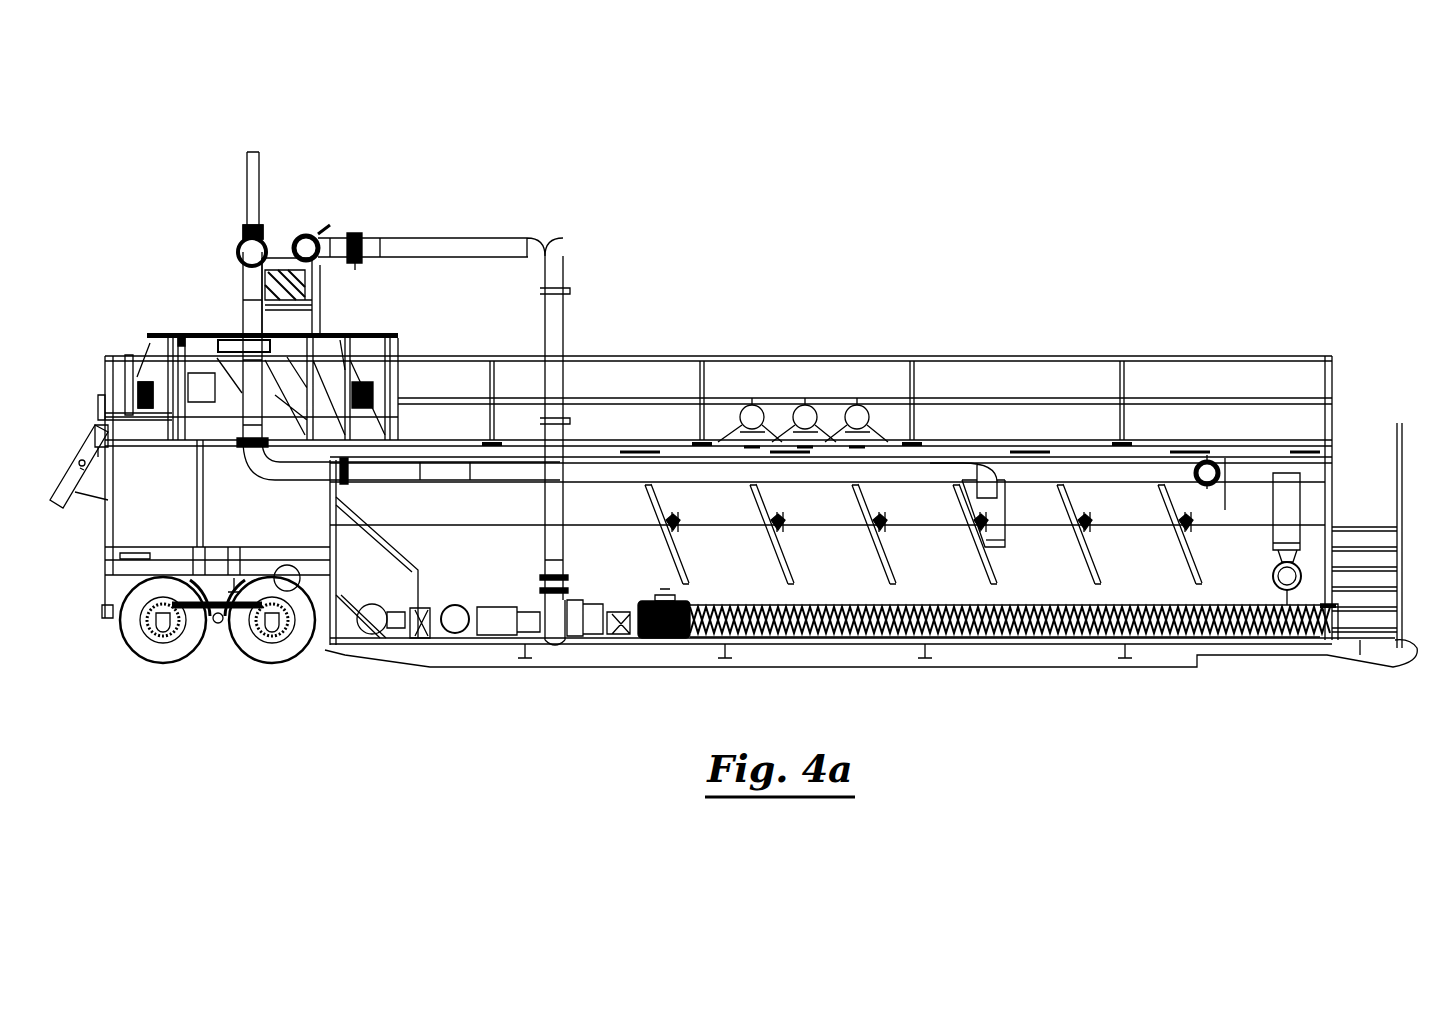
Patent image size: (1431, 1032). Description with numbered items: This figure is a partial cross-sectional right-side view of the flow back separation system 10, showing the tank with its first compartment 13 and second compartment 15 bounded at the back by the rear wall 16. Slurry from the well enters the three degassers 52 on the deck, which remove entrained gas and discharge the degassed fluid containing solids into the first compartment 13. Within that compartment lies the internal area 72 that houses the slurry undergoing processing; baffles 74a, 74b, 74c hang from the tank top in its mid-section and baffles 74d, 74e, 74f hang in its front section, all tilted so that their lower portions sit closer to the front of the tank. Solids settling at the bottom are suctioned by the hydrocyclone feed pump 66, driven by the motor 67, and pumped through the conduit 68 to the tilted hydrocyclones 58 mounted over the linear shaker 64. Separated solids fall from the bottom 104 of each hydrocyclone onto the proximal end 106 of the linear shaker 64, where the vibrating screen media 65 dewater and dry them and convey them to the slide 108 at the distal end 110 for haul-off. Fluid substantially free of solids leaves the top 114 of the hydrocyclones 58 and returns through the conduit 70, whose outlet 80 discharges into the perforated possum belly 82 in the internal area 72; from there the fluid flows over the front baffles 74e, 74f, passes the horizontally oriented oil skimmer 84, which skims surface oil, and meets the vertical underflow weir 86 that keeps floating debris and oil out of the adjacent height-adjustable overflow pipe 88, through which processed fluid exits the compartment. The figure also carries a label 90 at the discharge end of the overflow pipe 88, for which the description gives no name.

The flow back separation system 10 is at (802, 231).
The first compartment 13 is at (840, 570).
The second compartment 15 is at (265, 520).
The rear wall 16 is at (245, 605).
The degassers 52 is at (850, 403).
The hydrocyclones 58 is at (310, 265).
The linear shaker 64 is at (205, 238).
The vibrating screen media 65 is at (365, 350).
The hydrocyclone feed pump 66 is at (565, 642).
The motor 67 is at (680, 642).
The conduit 68 is at (560, 290).
The conduit 70 is at (930, 470).
The internal area 72 is at (595, 495).
The baffle 74a is at (690, 565).
The baffle 74b is at (787, 565).
The baffle 74c is at (892, 570).
The baffle 74d is at (995, 570).
The baffle 74e is at (1120, 495).
The baffle 74f is at (1178, 490).
The outlet 80 is at (1007, 490).
The possum belly 82 is at (1010, 505).
The oil skimmer 84 is at (1222, 492).
The underflow weir 86 is at (1228, 500).
The overflow pipe 88 is at (1290, 495).
The discharge pipe 90 is at (1287, 582).
The bottom 104 is at (330, 420).
The proximal end 106 is at (390, 432).
The slide 108 is at (65, 498).
The distal end 110 is at (104, 438).
The top 114 is at (258, 250).